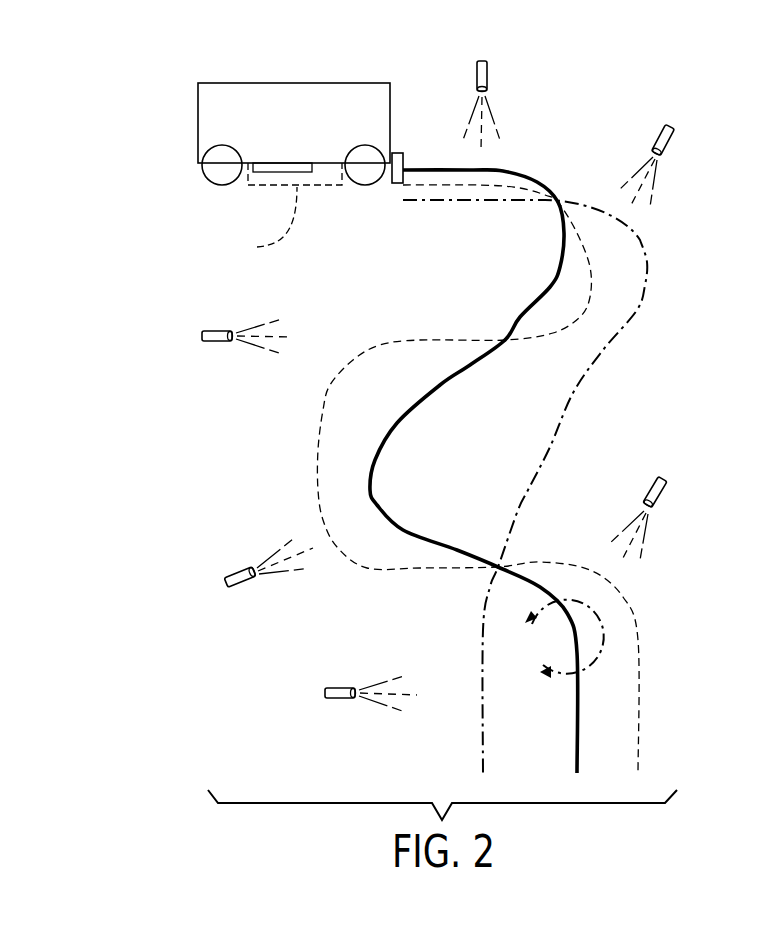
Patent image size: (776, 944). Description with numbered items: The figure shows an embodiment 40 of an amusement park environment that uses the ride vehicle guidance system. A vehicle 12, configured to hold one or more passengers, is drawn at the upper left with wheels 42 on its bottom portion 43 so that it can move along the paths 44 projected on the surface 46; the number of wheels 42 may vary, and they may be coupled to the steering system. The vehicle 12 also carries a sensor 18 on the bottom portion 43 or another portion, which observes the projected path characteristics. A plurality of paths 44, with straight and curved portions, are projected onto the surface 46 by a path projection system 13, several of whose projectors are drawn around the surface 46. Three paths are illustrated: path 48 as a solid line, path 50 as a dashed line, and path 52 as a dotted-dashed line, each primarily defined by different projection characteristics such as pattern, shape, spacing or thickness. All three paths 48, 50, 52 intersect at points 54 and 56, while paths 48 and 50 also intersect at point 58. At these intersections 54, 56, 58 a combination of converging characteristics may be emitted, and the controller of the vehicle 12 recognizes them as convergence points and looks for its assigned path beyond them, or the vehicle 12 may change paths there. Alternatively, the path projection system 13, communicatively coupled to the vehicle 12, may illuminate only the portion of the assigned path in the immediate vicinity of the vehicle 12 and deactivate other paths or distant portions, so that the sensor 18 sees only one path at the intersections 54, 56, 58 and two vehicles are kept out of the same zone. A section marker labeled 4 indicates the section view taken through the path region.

The section line of FIG. 4 is at (554, 644).
The vehicle 12 is at (392, 128).
The path projection system 13 is at (488, 72).
The sensor 18 is at (395, 153).
The embodiment of an environment 40 is at (291, 158).
The wheels 42 is at (208, 182).
The bottom portion 43 is at (261, 224).
The paths 44 is at (474, 471).
The surface 46 is at (549, 486).
The path 48 is at (398, 428).
The path 50 is at (320, 425).
The path 52 is at (558, 425).
The intersection point 54 is at (559, 201).
The intersection point 56 is at (496, 570).
The intersection point 58 is at (505, 342).